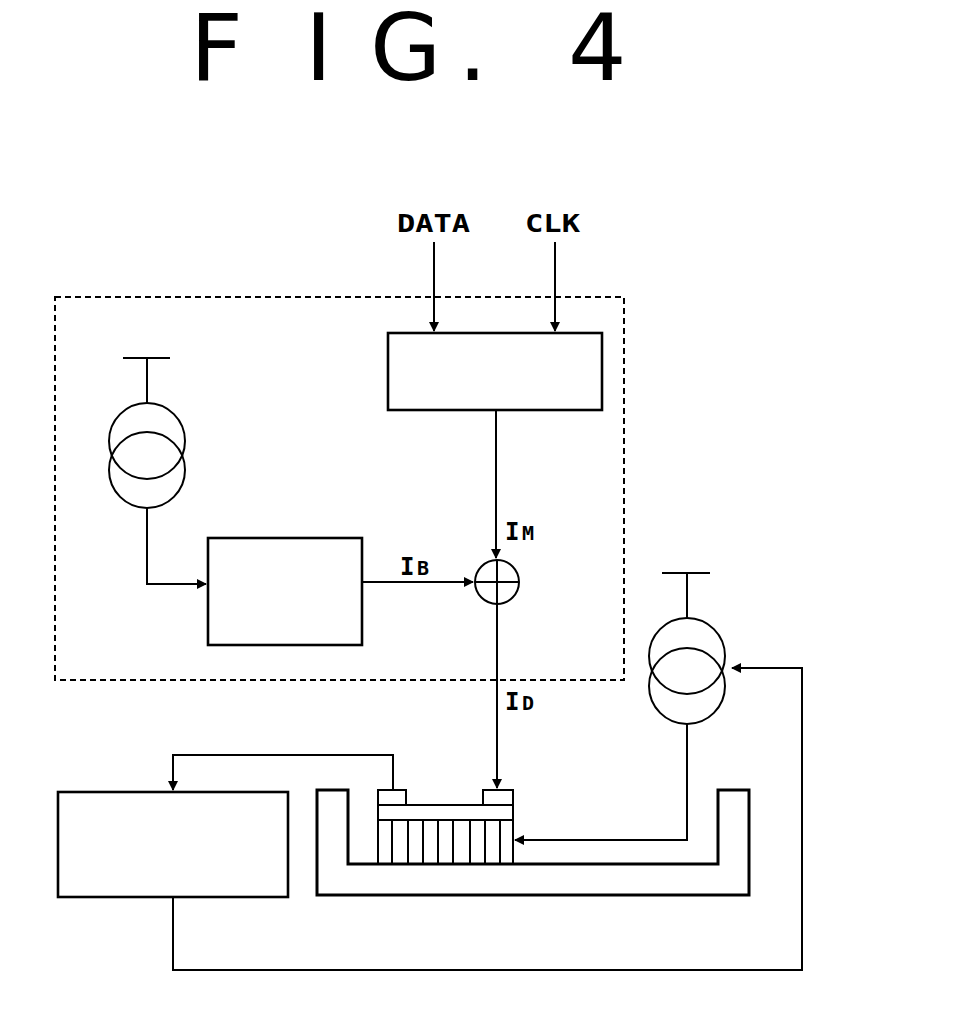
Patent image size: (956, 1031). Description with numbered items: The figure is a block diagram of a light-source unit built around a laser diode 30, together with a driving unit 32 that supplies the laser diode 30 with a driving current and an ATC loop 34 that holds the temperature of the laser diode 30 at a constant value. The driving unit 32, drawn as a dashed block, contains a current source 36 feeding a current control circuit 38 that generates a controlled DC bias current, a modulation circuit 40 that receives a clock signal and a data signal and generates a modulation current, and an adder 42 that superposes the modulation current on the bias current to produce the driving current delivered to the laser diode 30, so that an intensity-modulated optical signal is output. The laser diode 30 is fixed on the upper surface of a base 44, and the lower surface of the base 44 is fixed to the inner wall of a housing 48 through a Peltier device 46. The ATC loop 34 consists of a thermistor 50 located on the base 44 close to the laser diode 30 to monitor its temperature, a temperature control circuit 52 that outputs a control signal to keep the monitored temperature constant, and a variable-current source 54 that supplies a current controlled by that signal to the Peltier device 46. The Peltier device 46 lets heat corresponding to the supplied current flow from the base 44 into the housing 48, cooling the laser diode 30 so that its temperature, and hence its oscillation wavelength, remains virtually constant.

The laser diode 30 is at (514, 796).
The driving unit 32 is at (271, 297).
The ATC loop 34 is at (330, 973).
The current source 36 is at (193, 452).
The current control circuit 38 is at (301, 538).
The modulation circuit 40 is at (388, 370).
The adder 42 is at (520, 582).
The base 44 is at (515, 809).
The Peltier device 46 is at (513, 855).
The housing 48 is at (343, 880).
The thermistor 50 is at (406, 796).
The temperature control circuit 52 is at (105, 897).
The variable-current source 54 is at (732, 656).